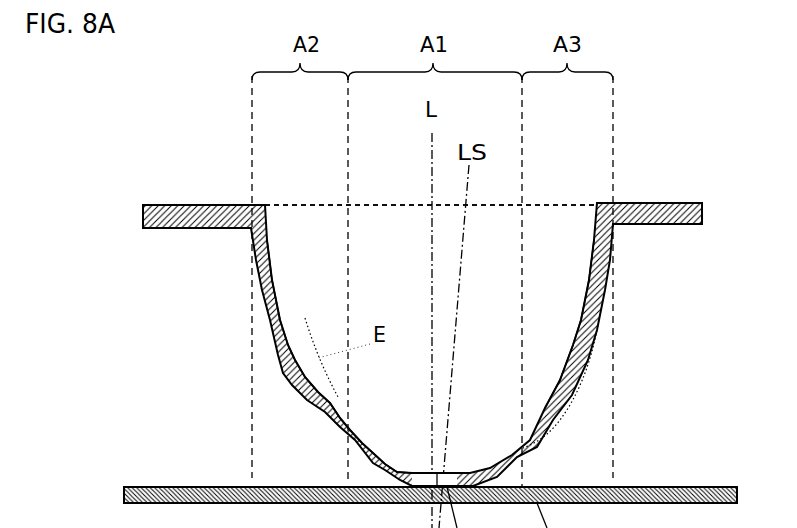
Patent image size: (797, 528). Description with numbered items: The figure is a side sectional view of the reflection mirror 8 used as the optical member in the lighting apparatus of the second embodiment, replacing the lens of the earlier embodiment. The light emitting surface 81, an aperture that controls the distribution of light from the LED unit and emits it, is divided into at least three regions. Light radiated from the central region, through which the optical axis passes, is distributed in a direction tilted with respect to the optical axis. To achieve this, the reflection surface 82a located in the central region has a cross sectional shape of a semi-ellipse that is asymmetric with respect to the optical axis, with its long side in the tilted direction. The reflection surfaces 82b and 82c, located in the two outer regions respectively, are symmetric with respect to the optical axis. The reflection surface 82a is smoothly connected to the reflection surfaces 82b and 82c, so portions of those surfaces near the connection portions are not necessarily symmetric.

The reflection mirror 8 is at (380, 272).
The light emitting surface 81 is at (393, 205).
The reflection surface 82a is at (367, 440).
The reflection surface 82b is at (278, 305).
The reflection surface 82c is at (587, 288).